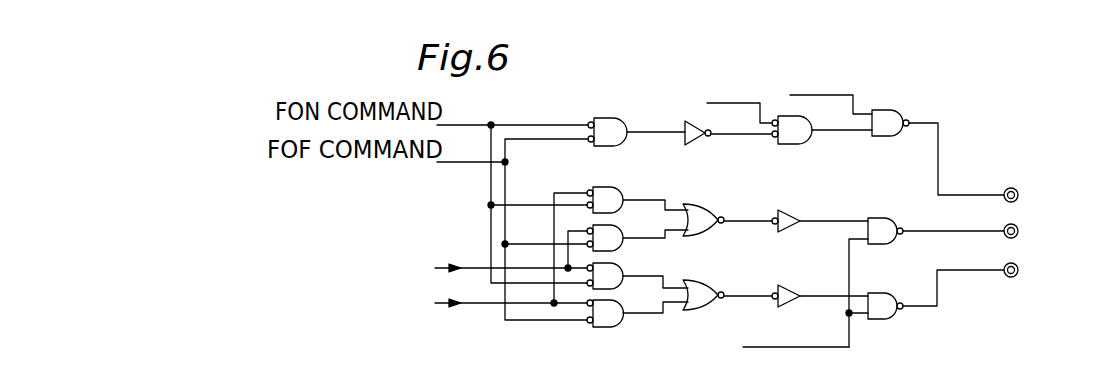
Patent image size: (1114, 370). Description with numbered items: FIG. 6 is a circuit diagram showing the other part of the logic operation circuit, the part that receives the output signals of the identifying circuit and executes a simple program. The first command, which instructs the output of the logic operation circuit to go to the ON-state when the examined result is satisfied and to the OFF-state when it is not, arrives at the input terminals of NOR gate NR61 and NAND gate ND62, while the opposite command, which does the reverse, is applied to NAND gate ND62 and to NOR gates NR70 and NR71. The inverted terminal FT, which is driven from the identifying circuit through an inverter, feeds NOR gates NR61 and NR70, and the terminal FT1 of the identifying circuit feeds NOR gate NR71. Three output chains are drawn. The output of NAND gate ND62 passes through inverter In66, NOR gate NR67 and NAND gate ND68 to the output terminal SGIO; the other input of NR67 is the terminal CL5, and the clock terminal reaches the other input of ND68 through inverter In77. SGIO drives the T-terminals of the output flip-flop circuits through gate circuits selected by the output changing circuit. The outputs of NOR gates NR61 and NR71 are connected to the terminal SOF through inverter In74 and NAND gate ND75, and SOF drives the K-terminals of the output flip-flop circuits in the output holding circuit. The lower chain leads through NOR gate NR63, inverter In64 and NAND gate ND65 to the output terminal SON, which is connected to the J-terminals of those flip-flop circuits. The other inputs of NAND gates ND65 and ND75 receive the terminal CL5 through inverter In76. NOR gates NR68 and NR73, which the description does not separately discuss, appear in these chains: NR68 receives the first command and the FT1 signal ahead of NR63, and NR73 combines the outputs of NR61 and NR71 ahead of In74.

The NAND gate ND62 is at (617, 146).
The inverter In66 is at (693, 143).
The terminal CL5 is at (715, 107).
The inverter In77 is at (804, 99).
The NOR gate NR67 is at (796, 144).
The NAND gate ND68 is at (891, 136).
The output terminal SGIO is at (1078, 180).
The NOR gate NR61 is at (618, 189).
The NOR gate NR71 is at (618, 251).
The NOR gate NR73 is at (705, 236).
The inverter In74 is at (793, 231).
The NAND gate ND75 is at (890, 244).
The terminal SOF is at (1070, 217).
The NOR gate NR68 is at (617, 289).
The NOR gate NR70 is at (617, 327).
The NOR gate NR63 is at (705, 310).
The inverter In64 is at (792, 306).
The NAND gate ND65 is at (885, 319).
The inverter In76 is at (768, 350).
The output terminal SON is at (1072, 255).
The terminal FT1 is at (487, 267).
The terminal FT is at (412, 290).